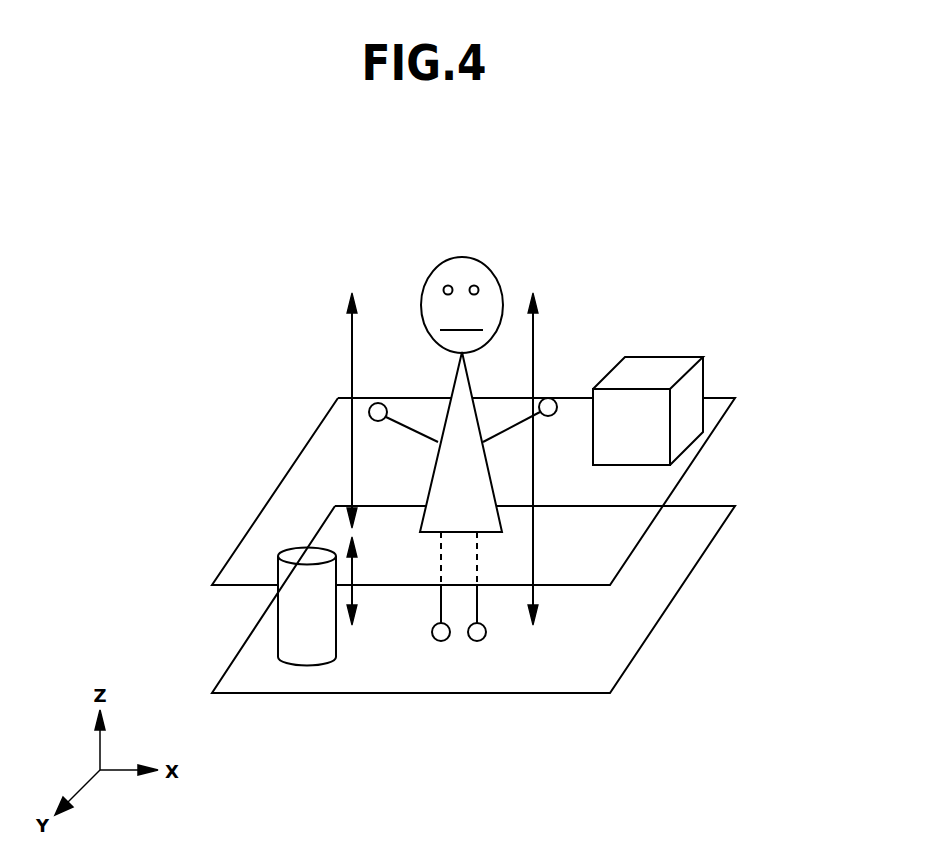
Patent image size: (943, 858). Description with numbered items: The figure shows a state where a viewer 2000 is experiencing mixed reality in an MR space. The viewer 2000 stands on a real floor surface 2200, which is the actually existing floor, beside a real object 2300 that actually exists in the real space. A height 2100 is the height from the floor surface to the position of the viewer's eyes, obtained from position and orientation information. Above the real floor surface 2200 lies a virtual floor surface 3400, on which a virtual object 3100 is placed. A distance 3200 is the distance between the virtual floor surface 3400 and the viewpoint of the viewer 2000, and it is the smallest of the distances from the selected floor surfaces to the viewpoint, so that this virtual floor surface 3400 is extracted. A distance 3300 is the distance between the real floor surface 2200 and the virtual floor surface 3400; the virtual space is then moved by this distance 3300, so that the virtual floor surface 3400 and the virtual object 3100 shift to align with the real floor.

The viewer 2000 is at (465, 257).
The height 2100 is at (533, 327).
The real floor surface 2200 is at (490, 693).
The real object 2300 is at (288, 623).
The virtual object 3100 is at (695, 380).
The distance 3200 is at (352, 352).
The distance 3300 is at (355, 594).
The virtual floor surface 3400 is at (617, 543).